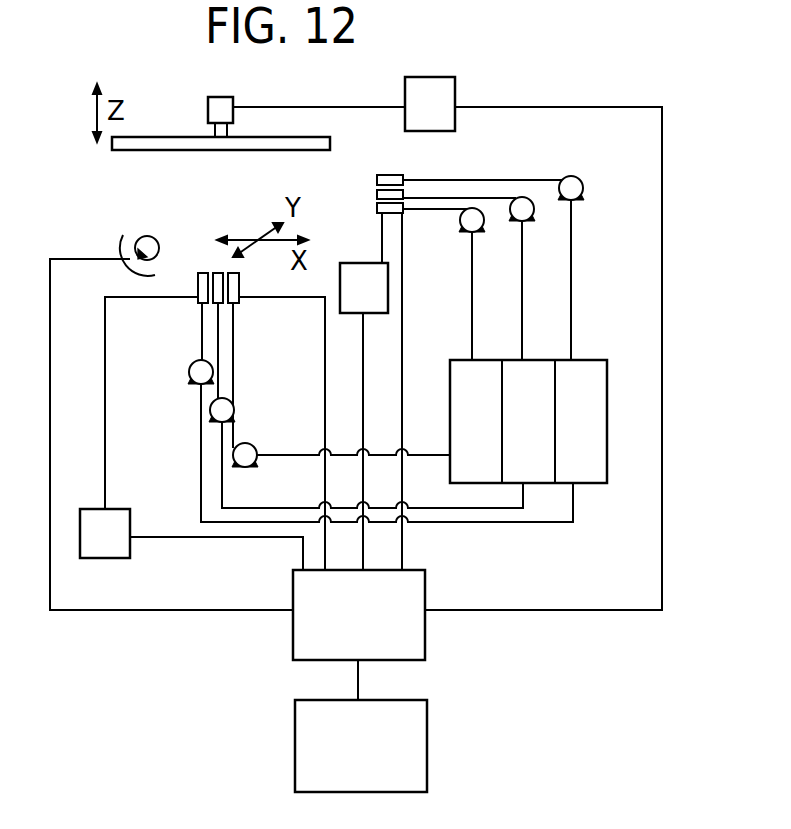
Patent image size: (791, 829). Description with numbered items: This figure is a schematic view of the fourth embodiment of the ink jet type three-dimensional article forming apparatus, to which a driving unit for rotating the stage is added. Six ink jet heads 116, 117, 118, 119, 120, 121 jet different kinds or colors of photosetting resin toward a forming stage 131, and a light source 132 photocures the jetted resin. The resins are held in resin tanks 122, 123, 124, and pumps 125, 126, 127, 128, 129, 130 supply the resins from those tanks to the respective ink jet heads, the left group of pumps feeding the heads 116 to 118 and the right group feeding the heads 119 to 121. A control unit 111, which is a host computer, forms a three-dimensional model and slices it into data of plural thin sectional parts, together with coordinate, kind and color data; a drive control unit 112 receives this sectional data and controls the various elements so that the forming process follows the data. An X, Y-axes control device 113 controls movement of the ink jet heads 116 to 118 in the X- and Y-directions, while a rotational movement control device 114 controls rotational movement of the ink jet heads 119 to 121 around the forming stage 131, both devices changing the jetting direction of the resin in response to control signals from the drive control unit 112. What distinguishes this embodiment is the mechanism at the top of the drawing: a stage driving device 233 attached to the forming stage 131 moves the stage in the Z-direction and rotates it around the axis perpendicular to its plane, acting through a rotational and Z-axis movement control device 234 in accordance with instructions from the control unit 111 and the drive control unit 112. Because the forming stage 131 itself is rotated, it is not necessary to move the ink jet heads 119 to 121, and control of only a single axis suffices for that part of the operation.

The control unit 111 is at (427, 722).
The drive control unit 112 is at (425, 593).
The X, Y-axes control device 113 is at (90, 509).
The rotational movement control device 114 is at (367, 263).
The ink jet head 116 is at (198, 297).
The ink jet head 117 is at (222, 273).
The ink jet head 118 is at (240, 285).
The ink jet head 119 is at (398, 213).
The ink jet head 120 is at (377, 194).
The ink jet head 121 is at (392, 175).
The resin tank 122 is at (462, 360).
The resin tank 123 is at (513, 360).
The resin tank 124 is at (588, 360).
The pump 125 is at (187, 372).
The pump 126 is at (210, 409).
The pump 127 is at (282, 436).
The pump 128 is at (459, 232).
The pump 129 is at (533, 215).
The pump 130 is at (584, 197).
The forming stage 131 is at (183, 152).
The light source 132 is at (132, 240).
The stage driving device 233 is at (208, 110).
The rotational and Z-axis movement control device 234 is at (443, 77).